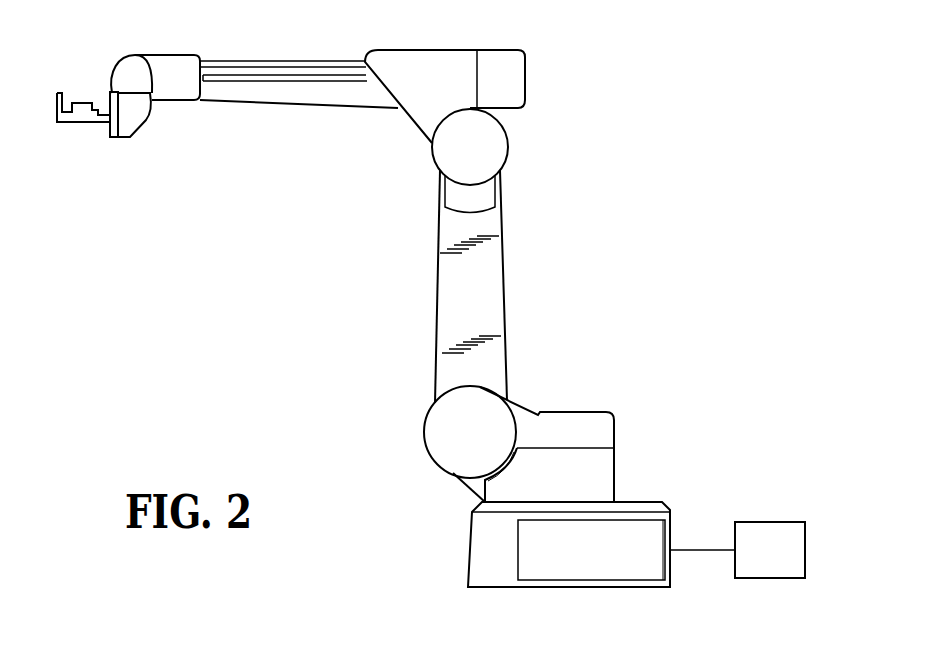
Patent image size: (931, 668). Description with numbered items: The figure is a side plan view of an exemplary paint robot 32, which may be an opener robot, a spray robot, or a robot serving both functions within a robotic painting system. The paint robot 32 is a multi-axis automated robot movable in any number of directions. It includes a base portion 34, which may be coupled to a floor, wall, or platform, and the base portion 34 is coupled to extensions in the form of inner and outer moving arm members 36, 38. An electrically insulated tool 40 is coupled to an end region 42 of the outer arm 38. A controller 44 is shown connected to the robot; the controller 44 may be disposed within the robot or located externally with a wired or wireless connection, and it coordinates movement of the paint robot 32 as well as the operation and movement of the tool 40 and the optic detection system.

The paint robot 32 is at (642, 217).
The base portion 34 is at (597, 482).
The inner moving arm member 36 is at (485, 262).
The outer moving arm member 38 is at (303, 93).
The electrically insulated tool 40 is at (53, 122).
The end region 42 is at (132, 112).
The controller 44 is at (783, 562).